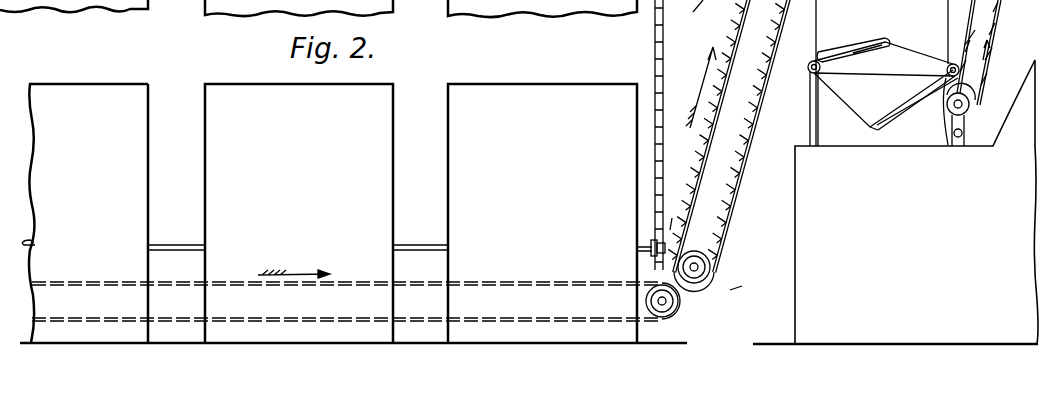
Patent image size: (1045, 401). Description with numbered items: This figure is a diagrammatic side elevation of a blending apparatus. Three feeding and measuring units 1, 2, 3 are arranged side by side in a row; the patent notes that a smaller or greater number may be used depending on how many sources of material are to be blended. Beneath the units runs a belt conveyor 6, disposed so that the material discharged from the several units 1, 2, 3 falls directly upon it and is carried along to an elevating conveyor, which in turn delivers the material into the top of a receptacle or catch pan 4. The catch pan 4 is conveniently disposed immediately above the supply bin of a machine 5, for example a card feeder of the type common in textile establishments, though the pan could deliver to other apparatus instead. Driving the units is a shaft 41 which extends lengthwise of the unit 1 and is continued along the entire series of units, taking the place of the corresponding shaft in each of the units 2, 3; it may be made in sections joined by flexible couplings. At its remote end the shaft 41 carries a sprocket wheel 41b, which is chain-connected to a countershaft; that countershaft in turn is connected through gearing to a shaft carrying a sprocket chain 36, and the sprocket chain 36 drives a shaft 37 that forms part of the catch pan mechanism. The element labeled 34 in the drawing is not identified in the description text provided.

The feeding and measuring unit 1 is at (68, 100).
The feeding and measuring unit 2 is at (247, 100).
The feeding and measuring unit 3 is at (547, 95).
The catch pan 4 is at (833, 8).
The machine 5 is at (818, 250).
The belt conveyor 6 is at (513, 282).
The vertical rack 34 is at (655, 38).
The sprocket chain 36 is at (1000, 8).
The shaft 37 is at (970, 100).
The shaft 41 is at (416, 243).
The sprocket wheel 41b is at (670, 196).